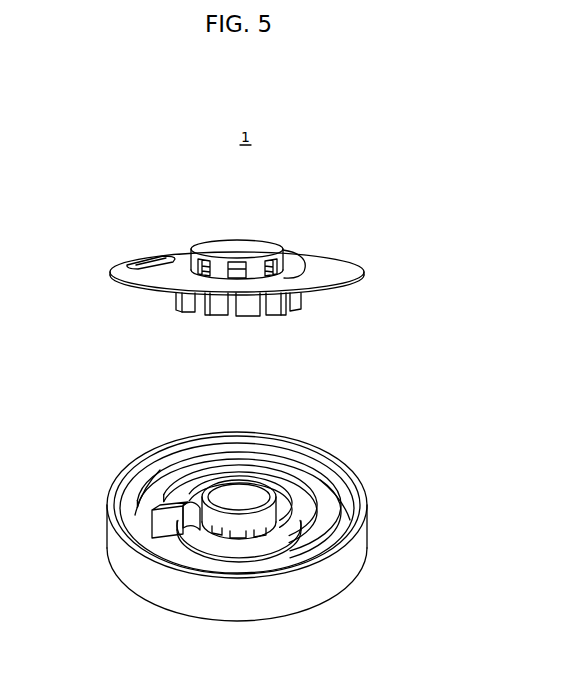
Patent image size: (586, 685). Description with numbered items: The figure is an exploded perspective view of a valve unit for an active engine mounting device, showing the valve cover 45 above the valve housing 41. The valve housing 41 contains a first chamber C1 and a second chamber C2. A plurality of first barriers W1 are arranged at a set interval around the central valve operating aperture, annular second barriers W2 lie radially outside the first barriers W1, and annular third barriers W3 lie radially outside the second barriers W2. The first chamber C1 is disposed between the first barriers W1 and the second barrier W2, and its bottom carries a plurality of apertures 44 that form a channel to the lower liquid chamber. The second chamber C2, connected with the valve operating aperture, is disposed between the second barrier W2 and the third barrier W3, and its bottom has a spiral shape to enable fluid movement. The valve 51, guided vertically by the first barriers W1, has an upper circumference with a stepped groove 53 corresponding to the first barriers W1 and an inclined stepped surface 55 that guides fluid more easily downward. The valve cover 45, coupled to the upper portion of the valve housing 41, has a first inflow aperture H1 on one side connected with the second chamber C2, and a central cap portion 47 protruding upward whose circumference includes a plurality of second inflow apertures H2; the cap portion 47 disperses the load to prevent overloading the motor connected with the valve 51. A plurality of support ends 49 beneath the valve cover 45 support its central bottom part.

The valve housing 41 is at (92, 542).
The aperture 44 is at (281, 542).
The valve cover 45 is at (327, 258).
The cap portion 47 is at (240, 245).
The support end 49 is at (248, 318).
The valve 51 is at (231, 484).
The stepped groove 53 is at (190, 538).
The inclined stepped surface 55 is at (203, 498).
The first inflow aperture H1 is at (147, 258).
The second inflow aperture H2 is at (287, 251).
The first barrier W1 is at (263, 480).
The second barrier W2 is at (283, 465).
The third barrier W3 is at (331, 463).
The first chamber C1 is at (171, 512).
The second chamber C2 is at (342, 512).